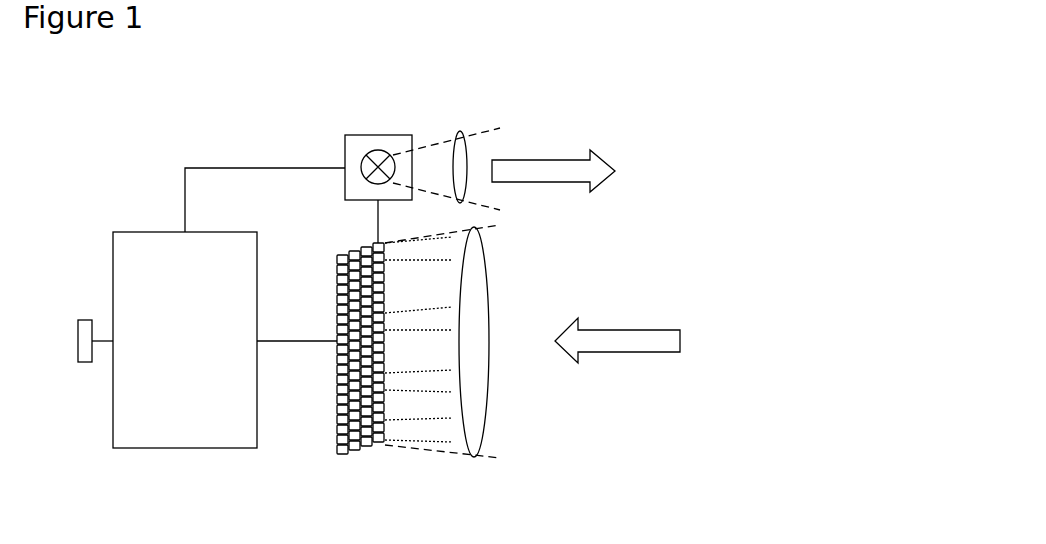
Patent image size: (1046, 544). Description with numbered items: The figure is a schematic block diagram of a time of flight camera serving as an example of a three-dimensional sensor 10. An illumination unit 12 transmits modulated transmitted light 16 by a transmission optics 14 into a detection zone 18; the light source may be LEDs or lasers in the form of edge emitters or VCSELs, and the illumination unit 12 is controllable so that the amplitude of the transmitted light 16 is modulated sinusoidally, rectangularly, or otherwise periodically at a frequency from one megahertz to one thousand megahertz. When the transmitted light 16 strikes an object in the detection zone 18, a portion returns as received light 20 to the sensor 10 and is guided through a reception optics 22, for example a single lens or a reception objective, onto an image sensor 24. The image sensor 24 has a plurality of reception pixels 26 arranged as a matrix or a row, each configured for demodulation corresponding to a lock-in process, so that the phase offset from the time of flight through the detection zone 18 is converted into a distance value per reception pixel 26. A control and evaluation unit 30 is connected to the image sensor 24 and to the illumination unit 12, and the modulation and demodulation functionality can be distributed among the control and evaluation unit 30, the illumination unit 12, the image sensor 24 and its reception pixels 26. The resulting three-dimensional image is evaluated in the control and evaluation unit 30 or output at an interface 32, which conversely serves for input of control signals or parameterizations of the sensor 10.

The 3D sensor 10 is at (125, 130).
The illumination unit 12 is at (367, 141).
The transmit lens 14 is at (464, 155).
The transmitted light 16 is at (543, 167).
The detection zone 18 is at (882, 183).
The received light 20 is at (640, 343).
The reception optics 22 is at (485, 380).
The image sensor 24 is at (332, 244).
The reception pixels 26 is at (353, 373).
The control and evaluation unit 30 is at (138, 383).
The interface 32 is at (78, 322).